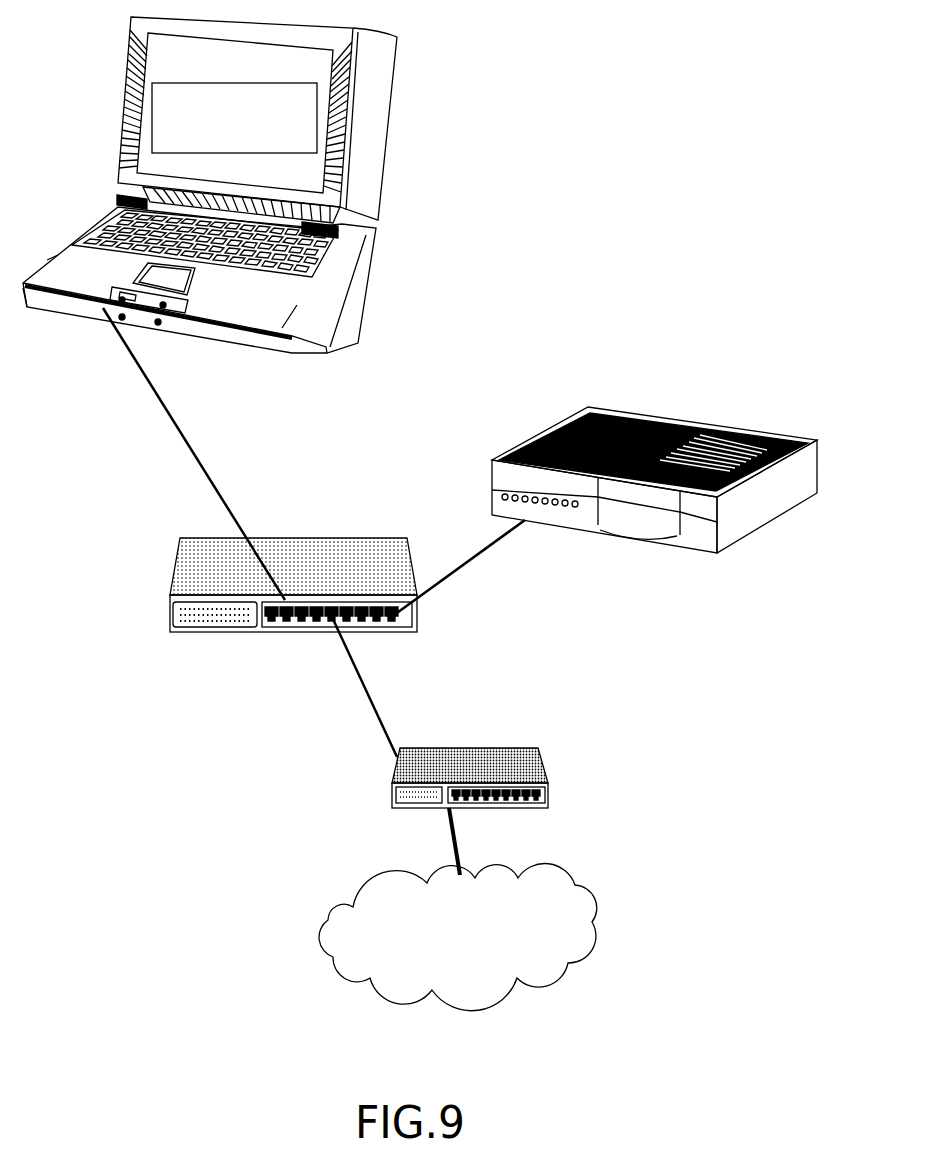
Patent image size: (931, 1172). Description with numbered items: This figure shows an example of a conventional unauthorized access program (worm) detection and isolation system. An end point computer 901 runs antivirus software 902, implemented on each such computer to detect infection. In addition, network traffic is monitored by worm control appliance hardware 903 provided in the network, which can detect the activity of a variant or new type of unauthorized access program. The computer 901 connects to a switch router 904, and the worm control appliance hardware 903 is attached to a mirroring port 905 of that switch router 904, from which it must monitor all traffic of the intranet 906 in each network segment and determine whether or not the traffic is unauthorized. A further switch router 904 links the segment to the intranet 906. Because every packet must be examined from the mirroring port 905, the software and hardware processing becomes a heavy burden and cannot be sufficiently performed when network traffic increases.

The computer 901 is at (397, 113).
The antivirus software 902 is at (157, 120).
The worm control appliance hardware 903 is at (607, 407).
The switch router 904 is at (565, 713).
The mirroring port 905 is at (417, 627).
The intranet 906 is at (557, 880).